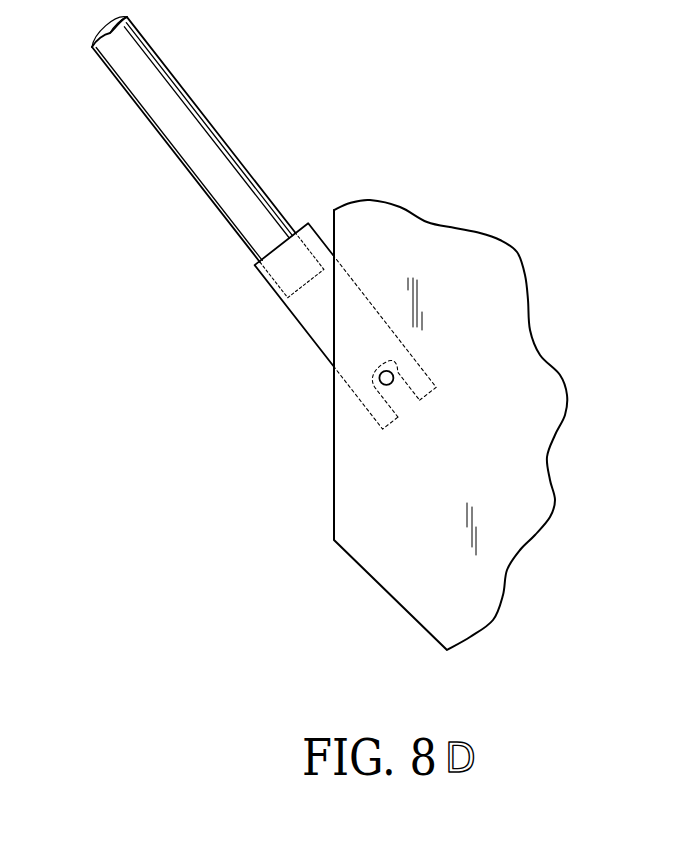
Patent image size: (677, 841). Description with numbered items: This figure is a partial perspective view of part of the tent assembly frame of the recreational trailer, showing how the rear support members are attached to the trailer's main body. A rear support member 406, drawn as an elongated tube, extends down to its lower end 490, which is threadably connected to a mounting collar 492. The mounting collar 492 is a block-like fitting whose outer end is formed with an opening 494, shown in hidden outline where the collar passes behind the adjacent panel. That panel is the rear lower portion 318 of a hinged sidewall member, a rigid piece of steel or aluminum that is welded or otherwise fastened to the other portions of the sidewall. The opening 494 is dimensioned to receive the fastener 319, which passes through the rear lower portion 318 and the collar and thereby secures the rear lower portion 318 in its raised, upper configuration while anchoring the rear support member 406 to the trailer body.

The rear support member 406 is at (219, 236).
The lower end 490 is at (208, 202).
The mounting collar 492 is at (308, 315).
The rear lower portion 318 is at (370, 540).
The fastener 319 is at (380, 379).
The opening 494 is at (408, 390).